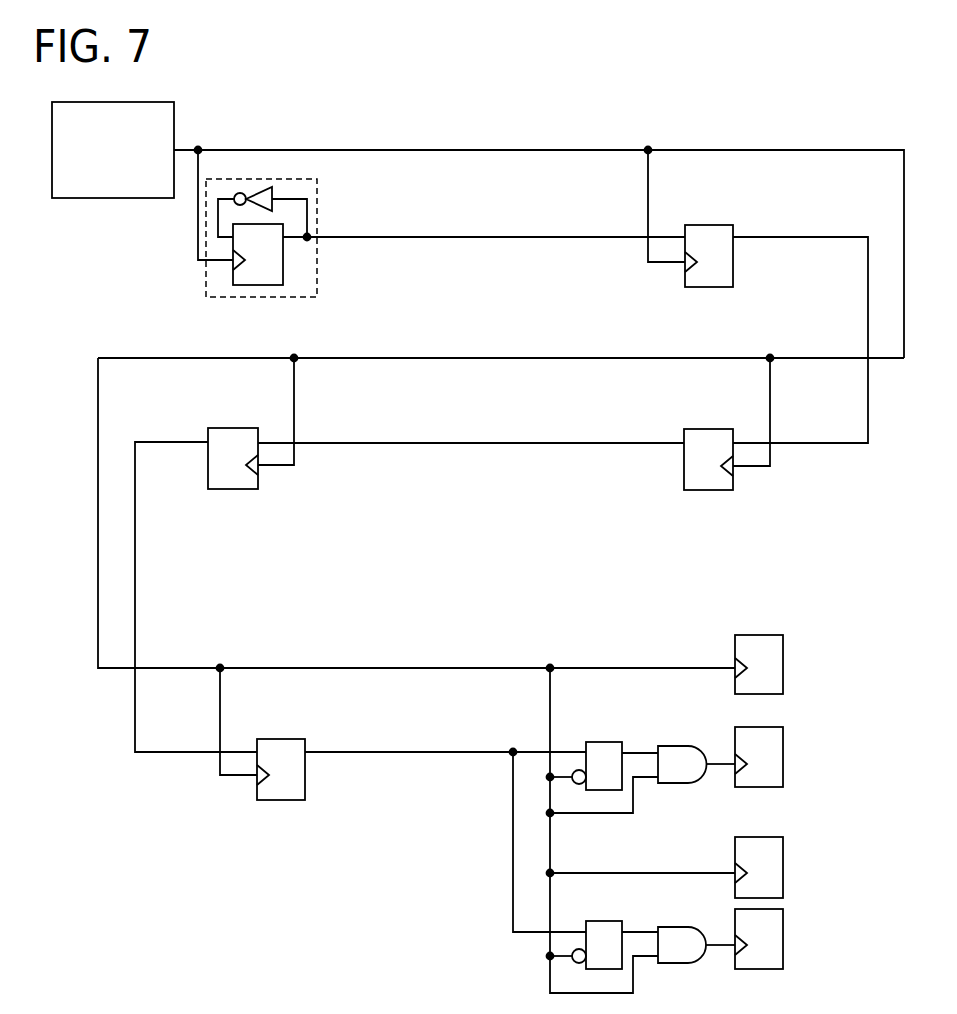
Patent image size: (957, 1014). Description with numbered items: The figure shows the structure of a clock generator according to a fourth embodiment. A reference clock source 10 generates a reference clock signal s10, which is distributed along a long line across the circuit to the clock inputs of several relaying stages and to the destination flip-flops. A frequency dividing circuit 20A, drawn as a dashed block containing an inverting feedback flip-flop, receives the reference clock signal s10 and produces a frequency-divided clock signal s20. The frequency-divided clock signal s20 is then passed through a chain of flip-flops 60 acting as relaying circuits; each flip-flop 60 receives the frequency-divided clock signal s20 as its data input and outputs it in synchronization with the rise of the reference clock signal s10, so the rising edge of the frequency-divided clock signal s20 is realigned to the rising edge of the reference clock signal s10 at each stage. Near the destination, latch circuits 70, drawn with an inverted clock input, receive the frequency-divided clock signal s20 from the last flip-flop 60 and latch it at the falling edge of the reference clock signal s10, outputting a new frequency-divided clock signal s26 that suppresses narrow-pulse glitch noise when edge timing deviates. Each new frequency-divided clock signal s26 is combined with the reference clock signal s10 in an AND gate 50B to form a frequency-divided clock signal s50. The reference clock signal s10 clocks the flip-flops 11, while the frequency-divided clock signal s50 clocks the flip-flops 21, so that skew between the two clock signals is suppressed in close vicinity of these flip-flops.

The reference clock source 10 is at (175, 123).
The frequency dividing circuit 20A is at (205, 272).
The reference clock signal s10 is at (465, 150).
The frequency-divided clock signal s20 is at (465, 237).
The flip-flop 60 is at (733, 272).
The latch circuit 70 is at (604, 742).
The new frequency-divided clock signal s26 is at (635, 752).
The AND gate 50B is at (675, 783).
The frequency-divided clock signal s50 is at (718, 764).
The flip-flop 11 is at (783, 663).
The flip-flop 21 is at (783, 757).